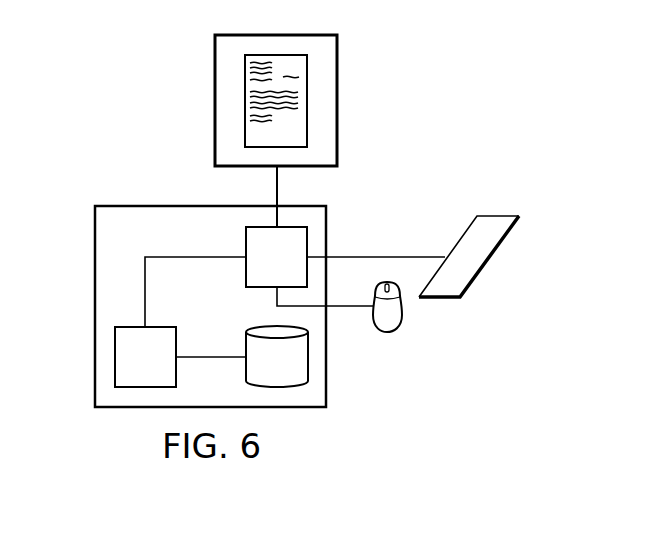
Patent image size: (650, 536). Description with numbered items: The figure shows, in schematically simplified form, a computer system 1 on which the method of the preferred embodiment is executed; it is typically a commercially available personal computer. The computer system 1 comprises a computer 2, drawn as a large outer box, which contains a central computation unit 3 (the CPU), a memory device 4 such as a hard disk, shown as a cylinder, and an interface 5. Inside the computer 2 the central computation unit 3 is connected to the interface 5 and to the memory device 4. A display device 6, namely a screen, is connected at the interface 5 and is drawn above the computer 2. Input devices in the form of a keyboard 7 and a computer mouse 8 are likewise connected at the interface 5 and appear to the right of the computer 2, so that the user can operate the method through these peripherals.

The computer system 1 is at (88, 162).
The computer 2 is at (88, 318).
The central computation unit 3 is at (137, 370).
The memory device 4 is at (269, 370).
The interface 5 is at (269, 268).
The display device 6 is at (337, 100).
The keyboard 7 is at (483, 268).
The computer mouse 8 is at (383, 331).